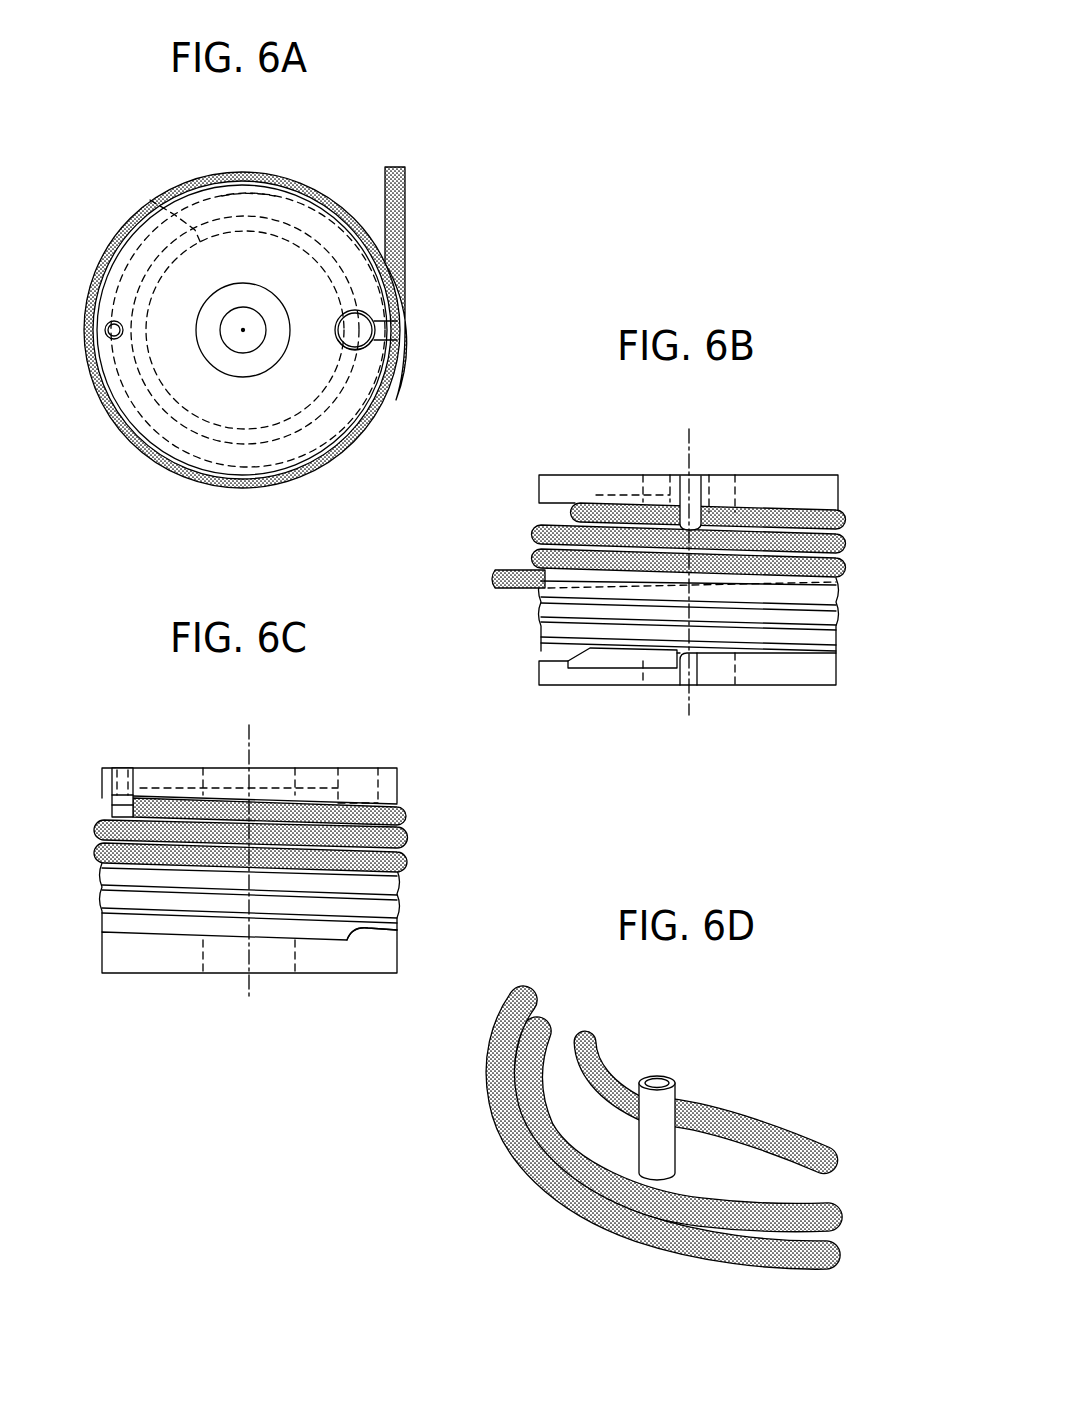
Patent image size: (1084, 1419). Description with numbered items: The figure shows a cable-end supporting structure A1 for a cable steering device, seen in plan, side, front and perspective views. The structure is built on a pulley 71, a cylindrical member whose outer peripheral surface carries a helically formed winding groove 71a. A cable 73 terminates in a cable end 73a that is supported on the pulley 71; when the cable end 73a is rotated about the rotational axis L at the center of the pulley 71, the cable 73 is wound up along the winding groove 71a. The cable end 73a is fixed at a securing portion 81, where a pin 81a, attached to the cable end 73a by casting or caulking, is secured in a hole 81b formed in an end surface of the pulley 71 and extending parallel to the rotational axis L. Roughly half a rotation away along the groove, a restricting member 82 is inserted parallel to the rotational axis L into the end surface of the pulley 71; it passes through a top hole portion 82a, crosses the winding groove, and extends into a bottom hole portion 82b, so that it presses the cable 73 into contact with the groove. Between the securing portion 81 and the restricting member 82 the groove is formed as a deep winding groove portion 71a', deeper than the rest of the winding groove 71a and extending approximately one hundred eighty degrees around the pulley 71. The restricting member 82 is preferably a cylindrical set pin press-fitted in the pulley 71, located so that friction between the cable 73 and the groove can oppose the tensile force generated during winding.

In FIG. 6A, the pulley 71 is at (172, 303).
In FIG. 6B, the pulley 71 is at (817, 470).
In FIG. 6C, the pulley 71 is at (297, 762).
In FIG. 6A, the winding groove 71a is at (248, 289).
In FIG. 6B, the winding groove 71a is at (716, 616).
In FIG. 6C, the winding groove 71a is at (217, 890).
In FIG. 6A, the deep winding groove portion 71a' is at (148, 198).
In FIG. 6B, the deep winding groove portion 71a' is at (568, 599).
In FIG. 6C, the deep winding groove portion 71a' is at (426, 927).
In FIG. 6A, the cable 73 is at (406, 204).
In FIG. 6B, the cable 73 is at (511, 571).
In FIG. 6C, the cable 73 is at (410, 838).
In FIG. 6D, the cable 73 is at (520, 1152).
In FIG. 6A, the cable end 73a is at (250, 215).
In FIG. 6B, the cable end 73a is at (588, 507).
In FIG. 6C, the cable end 73a is at (153, 798).
In FIG. 6D, the cable end 73a is at (603, 1041).
In FIG. 6A, the securing portion 81 is at (358, 325).
In FIG. 6B, the securing portion 81 is at (710, 490).
In FIG. 6C, the securing portion 81 is at (423, 694).
In FIG. 6A, the pin 81a is at (356, 349).
In FIG. 6C, the pin 81a is at (350, 770).
In FIG. 6A, the hole 81b is at (363, 341).
In FIG. 6C, the hole 81b is at (367, 773).
In FIG. 6A, the restricting member 82 is at (112, 337).
In FIG. 6B, the restricting member 82 is at (684, 491).
In FIG. 6C, the restricting member 82 is at (113, 804).
In FIG. 6D, the restricting member 82 is at (662, 1078).
In FIG. 6C, the top hole portion 82a is at (120, 776).
In FIG. 6C, the bottom hole portion 82b is at (110, 813).
In FIG. 6A, the rotational axis L is at (243, 331).
In FIG. 6B, the rotational axis L is at (690, 698).
In FIG. 6C, the rotational axis L is at (256, 738).
In FIG. 6A, the cable-end supporting structure A1 is at (292, 145).
In FIG. 6B, the cable-end supporting structure A1 is at (707, 440).
In FIG. 6C, the cable-end supporting structure A1 is at (154, 730).
In FIG. 6D, the cable-end supporting structure A1 is at (722, 995).